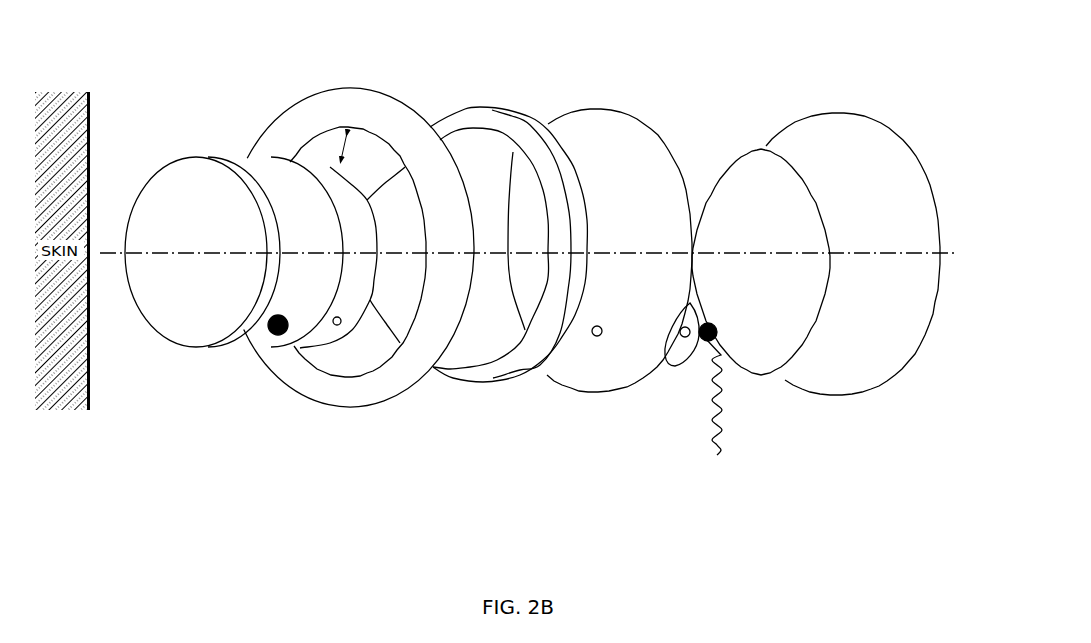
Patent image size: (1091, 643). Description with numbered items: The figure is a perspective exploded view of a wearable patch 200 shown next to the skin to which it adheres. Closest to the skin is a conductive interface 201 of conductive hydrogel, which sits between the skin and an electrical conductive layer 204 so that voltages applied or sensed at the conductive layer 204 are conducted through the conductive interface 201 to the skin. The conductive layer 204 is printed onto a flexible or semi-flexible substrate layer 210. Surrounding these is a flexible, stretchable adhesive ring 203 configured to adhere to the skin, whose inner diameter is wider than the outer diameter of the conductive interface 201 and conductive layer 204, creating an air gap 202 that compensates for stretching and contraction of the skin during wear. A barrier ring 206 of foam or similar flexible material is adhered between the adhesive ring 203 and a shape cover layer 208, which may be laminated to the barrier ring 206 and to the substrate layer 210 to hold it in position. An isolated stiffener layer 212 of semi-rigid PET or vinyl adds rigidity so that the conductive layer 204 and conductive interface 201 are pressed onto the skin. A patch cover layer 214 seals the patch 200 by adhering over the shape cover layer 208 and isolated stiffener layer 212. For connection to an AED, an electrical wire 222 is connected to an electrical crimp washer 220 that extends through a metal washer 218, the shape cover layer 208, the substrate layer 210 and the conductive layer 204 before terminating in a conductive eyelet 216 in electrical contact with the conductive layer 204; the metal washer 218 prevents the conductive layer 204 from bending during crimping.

The wearable patch 200 is at (514, 64).
The conductive interface 201 is at (203, 350).
The air gap 202 is at (347, 130).
The adhesive ring 203 is at (363, 397).
The electrical conductive layer 204 is at (302, 332).
The barrier ring 206 is at (473, 368).
The shape cover layer 208 is at (567, 376).
The substrate layer 210 is at (318, 338).
The isolated stiffener layer 212 is at (767, 362).
The patch cover layer 214 is at (857, 384).
The conductive eyelet 216 is at (278, 334).
The metal washer 218 is at (678, 354).
The electrical crimp washer 220 is at (707, 322).
The electrical wire 222 is at (717, 456).